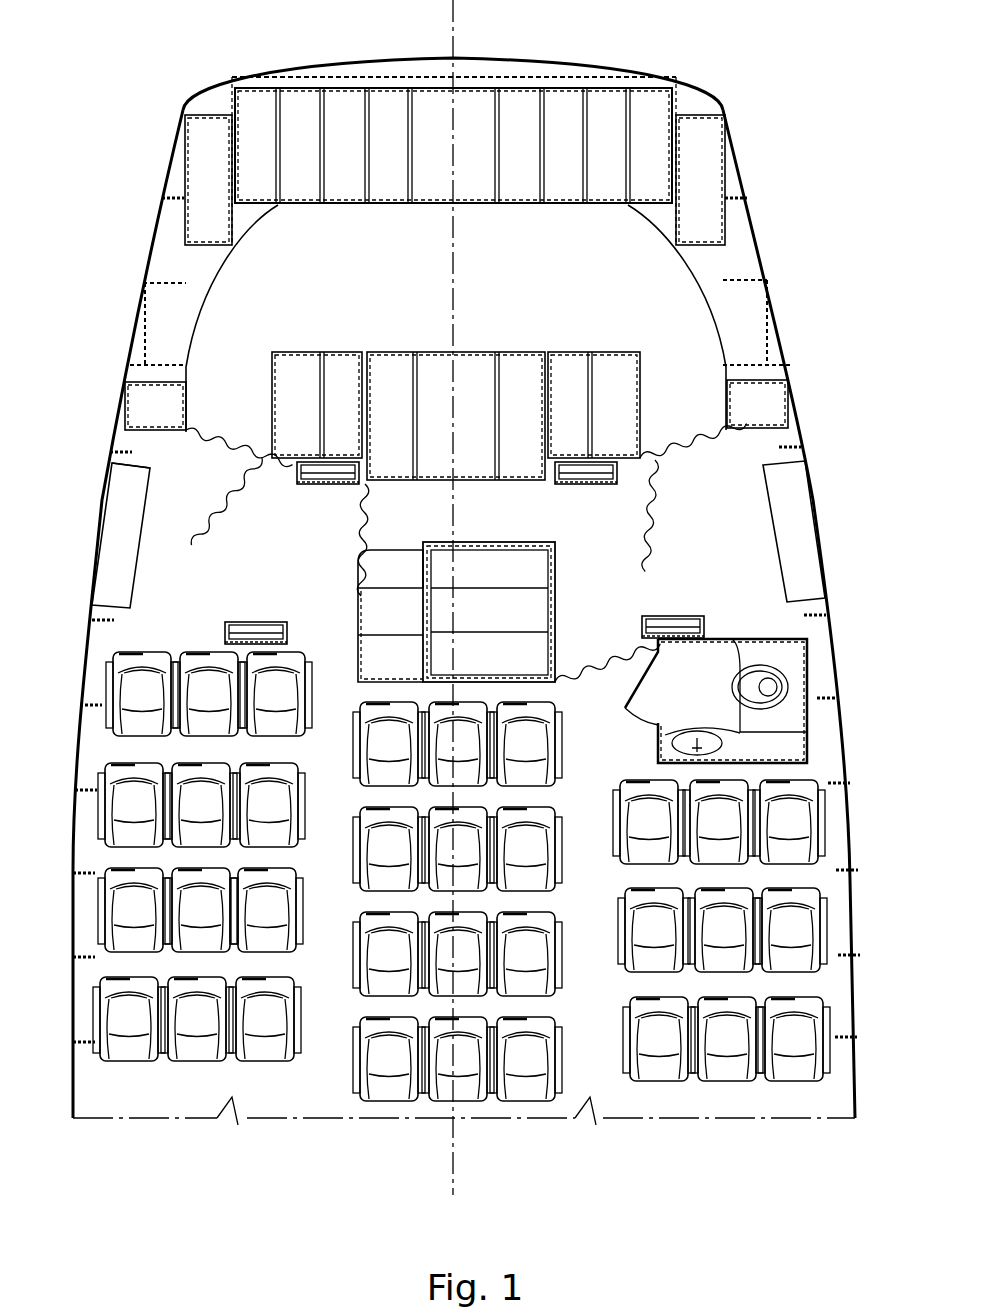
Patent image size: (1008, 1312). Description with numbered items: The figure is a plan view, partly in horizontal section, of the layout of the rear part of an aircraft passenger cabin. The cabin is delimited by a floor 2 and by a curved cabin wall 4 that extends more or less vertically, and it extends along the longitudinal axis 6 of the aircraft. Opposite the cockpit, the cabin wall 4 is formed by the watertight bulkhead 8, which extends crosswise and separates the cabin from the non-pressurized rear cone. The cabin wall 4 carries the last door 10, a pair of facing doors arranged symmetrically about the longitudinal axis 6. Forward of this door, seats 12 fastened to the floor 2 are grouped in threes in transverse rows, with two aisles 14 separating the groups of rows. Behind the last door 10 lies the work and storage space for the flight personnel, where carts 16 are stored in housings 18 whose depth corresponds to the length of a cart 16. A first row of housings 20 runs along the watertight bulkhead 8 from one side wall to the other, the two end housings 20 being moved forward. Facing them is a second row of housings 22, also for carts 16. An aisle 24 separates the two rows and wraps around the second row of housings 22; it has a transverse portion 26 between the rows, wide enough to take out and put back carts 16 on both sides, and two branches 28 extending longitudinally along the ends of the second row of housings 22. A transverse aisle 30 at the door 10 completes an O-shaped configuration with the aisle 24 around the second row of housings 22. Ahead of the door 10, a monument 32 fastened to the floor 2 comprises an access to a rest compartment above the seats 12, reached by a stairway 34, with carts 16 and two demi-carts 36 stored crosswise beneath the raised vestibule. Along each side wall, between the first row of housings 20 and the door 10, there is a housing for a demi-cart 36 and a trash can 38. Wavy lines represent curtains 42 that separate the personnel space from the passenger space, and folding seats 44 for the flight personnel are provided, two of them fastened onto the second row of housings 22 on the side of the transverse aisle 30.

The floor 2 is at (672, 558).
The cabin wall 4 is at (838, 662).
The longitudinal axis 6 is at (468, 1182).
The watertight bulkhead 8 is at (505, 58).
The last door 10 is at (117, 537).
The seats 12 is at (793, 1070).
The aisles 14 is at (330, 1057).
The carts 16 is at (390, 195).
The housings 18 is at (678, 92).
The housings 20 is at (345, 75).
The second row of housings 22 is at (428, 483).
The aisle 24 is at (621, 285).
The transverse portion 26 is at (247, 282).
The branches 28 is at (200, 367).
The transverse aisle 30 is at (172, 530).
The monument 32 is at (500, 542).
The stairway 34 is at (372, 570).
The demi-carts 36 is at (770, 405).
The trash can 38 is at (160, 338).
The curtains 42 is at (665, 487).
The folding seats 44 is at (330, 484).